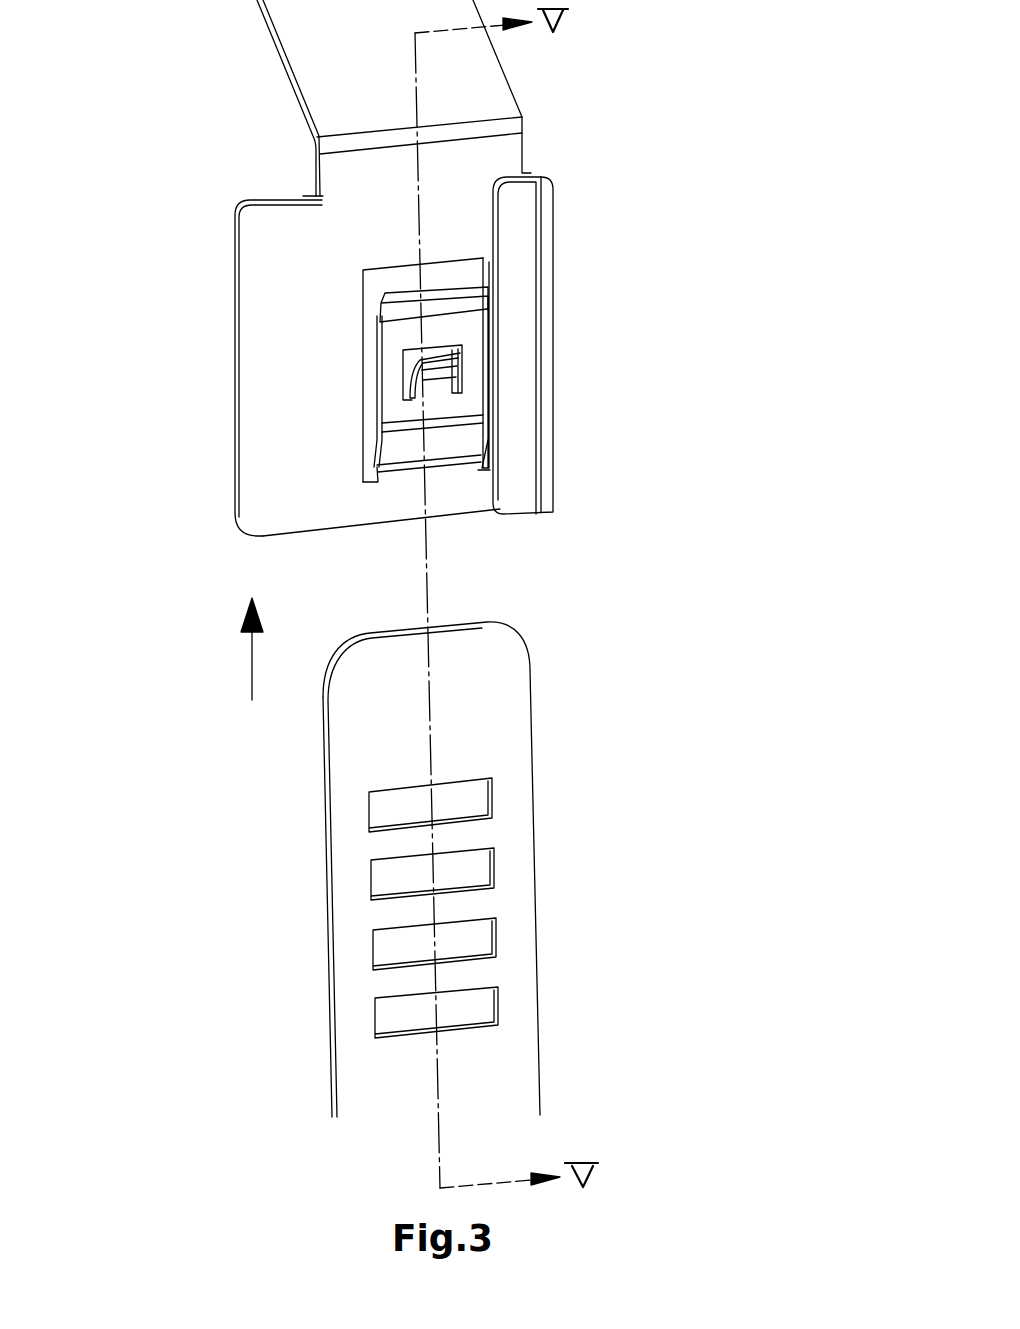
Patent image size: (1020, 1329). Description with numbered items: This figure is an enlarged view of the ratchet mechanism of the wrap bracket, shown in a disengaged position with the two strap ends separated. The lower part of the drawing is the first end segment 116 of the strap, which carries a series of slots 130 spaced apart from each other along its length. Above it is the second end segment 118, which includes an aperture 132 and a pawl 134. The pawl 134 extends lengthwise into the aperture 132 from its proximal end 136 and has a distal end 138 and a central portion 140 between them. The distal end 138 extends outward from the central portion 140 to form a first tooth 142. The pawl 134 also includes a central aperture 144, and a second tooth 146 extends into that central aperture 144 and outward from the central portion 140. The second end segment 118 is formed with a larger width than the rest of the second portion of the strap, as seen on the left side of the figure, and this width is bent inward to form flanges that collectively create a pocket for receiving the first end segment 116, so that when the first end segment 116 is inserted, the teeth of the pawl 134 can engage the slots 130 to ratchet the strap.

The first end segment 116 is at (568, 908).
The second end segment 118 is at (583, 155).
The slots 130 is at (310, 798).
The aperture 132 is at (373, 282).
The pawl 134 is at (388, 247).
The proximal end 136 is at (402, 468).
The distal end 138 is at (403, 307).
The central portion 140 is at (393, 375).
The first tooth 142 is at (455, 292).
The central aperture 144 is at (443, 352).
The second tooth 146 is at (445, 372).